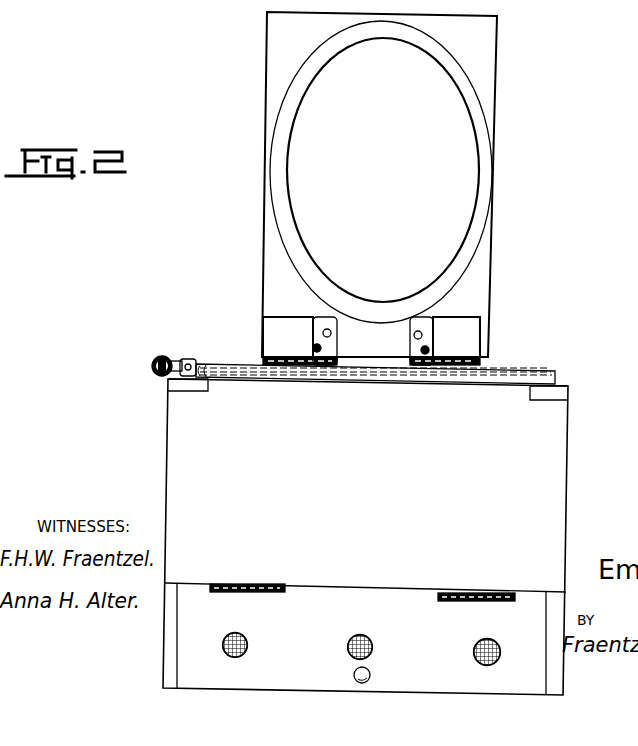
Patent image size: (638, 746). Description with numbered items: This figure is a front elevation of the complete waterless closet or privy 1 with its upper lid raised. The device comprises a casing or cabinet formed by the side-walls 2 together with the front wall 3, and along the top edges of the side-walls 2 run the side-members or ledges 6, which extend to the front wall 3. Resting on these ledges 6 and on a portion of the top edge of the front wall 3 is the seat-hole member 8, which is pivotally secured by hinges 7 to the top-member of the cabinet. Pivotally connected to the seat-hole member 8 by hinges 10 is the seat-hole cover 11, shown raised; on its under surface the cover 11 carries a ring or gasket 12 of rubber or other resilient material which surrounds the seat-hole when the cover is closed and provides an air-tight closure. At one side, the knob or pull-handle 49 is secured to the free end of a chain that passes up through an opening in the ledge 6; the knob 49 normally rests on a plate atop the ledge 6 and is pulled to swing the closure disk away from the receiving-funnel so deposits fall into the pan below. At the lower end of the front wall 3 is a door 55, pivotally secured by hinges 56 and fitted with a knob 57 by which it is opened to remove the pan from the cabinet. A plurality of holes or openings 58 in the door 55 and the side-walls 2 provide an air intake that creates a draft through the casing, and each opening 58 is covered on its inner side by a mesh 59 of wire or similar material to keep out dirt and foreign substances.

The waterless closet 1 is at (384, 184).
The seat-hole cover 11 is at (268, 66).
The ring or gasket 12 is at (468, 113).
The hinges 7 is at (264, 357).
The hinges 10 is at (330, 375).
The seat-hole member 8 is at (268, 380).
The knob or pull-handle 49 is at (158, 358).
The front wall 3 is at (540, 464).
The side-members or ledges 6 is at (172, 389).
The door 55 is at (387, 598).
The side-walls 2 is at (165, 637).
The hinges 56 is at (270, 577).
The holes or openings 58 is at (347, 645).
The mesh 59 is at (240, 636).
The knob 57 is at (372, 672).